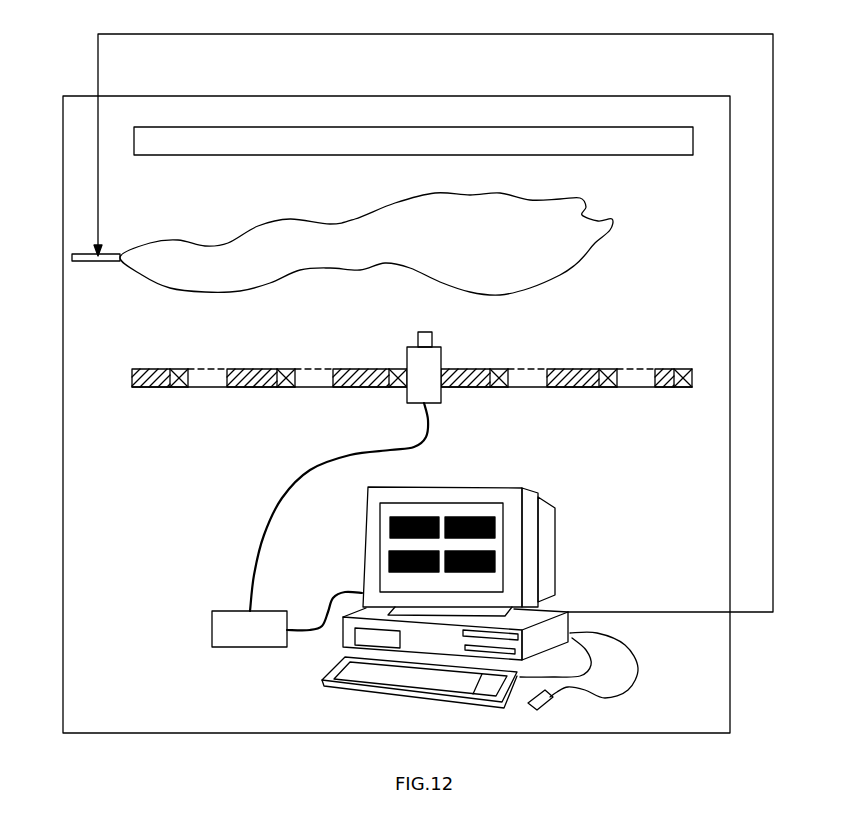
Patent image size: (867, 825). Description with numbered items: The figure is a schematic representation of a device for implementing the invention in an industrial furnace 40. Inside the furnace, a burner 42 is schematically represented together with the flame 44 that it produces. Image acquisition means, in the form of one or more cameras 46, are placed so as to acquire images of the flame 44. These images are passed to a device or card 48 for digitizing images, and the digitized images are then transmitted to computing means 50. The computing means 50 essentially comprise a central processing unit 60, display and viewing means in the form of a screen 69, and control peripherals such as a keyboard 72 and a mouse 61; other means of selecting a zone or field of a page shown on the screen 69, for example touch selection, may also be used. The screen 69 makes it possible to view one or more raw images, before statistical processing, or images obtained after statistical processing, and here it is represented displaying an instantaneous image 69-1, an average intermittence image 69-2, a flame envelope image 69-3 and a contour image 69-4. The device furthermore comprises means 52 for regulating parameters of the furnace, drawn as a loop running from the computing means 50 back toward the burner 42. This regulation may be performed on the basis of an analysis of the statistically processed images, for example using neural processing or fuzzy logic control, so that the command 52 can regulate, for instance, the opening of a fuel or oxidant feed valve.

The industrial furnace 40 is at (709, 117).
The burner 42 is at (108, 252).
The flame 44 is at (575, 258).
The camera 46 is at (405, 358).
The card for digitizing images 48 is at (213, 632).
The computing means 50 is at (562, 488).
The means for regulating parameters 52 is at (775, 338).
The central processing unit 60 is at (577, 627).
The mouse 61 is at (540, 703).
The screen 69 is at (366, 516).
The instantaneous image 69-1 is at (390, 565).
The average intermittence image 69-2 is at (408, 516).
The flame envelope image 69-3 is at (478, 516).
The contour image 69-4 is at (500, 568).
The keyboard 72 is at (348, 688).